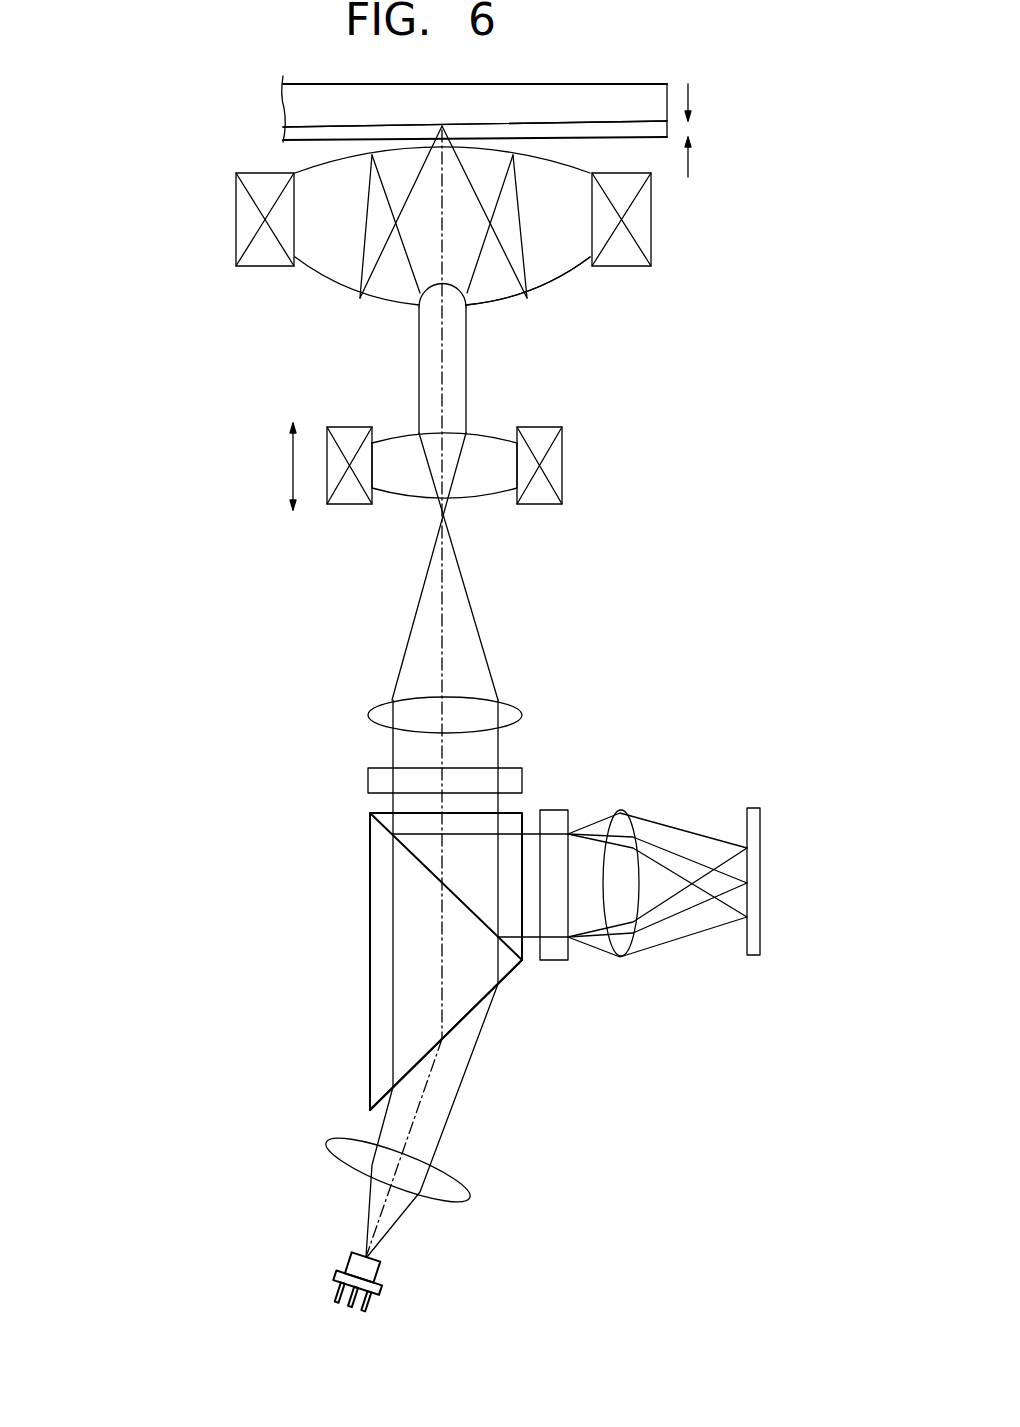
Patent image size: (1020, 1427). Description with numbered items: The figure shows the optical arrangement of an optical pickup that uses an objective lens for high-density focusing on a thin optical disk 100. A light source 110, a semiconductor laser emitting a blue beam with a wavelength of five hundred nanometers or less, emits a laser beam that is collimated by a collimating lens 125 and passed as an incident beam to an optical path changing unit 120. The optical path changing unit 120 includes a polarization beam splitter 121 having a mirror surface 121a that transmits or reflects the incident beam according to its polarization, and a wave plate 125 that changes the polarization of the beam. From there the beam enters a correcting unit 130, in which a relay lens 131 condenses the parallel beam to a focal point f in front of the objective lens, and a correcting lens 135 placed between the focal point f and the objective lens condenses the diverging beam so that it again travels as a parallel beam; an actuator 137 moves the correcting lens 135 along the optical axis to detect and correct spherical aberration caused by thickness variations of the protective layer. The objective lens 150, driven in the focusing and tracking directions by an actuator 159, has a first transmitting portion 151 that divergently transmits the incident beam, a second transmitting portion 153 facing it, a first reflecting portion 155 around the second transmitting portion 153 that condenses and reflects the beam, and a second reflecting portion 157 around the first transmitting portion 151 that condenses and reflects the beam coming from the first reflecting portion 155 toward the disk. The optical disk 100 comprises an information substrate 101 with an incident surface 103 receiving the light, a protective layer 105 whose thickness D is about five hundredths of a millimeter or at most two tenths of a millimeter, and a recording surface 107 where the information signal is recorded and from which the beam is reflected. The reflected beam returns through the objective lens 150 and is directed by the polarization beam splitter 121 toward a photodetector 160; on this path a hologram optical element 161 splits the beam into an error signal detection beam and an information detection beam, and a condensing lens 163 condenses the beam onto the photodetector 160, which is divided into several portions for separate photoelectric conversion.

The optical disk 100 is at (250, 75).
The information substrate 101 is at (564, 124).
The incident surface 103 is at (640, 140).
The protective layer 105 is at (560, 130).
The recording surface 107 is at (637, 120).
The light source 110 is at (380, 1272).
The optical path changing unit 120 is at (317, 852).
The polarization beam splitter 121 is at (370, 938).
The mirror surface 121a is at (472, 915).
The collimating lens 125 is at (507, 780).
The correcting unit 130 is at (351, 618).
The relay lens 131 is at (520, 703).
The correcting lens 135 is at (492, 498).
The actuator 137 is at (557, 456).
The objective lens 150 is at (313, 305).
The first transmitting portion 151 is at (419, 310).
The second transmitting portion 153 is at (447, 138).
The first reflecting portion 155 is at (453, 180).
The second reflecting portion 157 is at (537, 300).
The actuator 159 is at (244, 267).
The photodetector 160 is at (750, 822).
The hologram optical element 161 is at (568, 815).
The condensing lens 163 is at (630, 815).
The focal point f is at (440, 513).